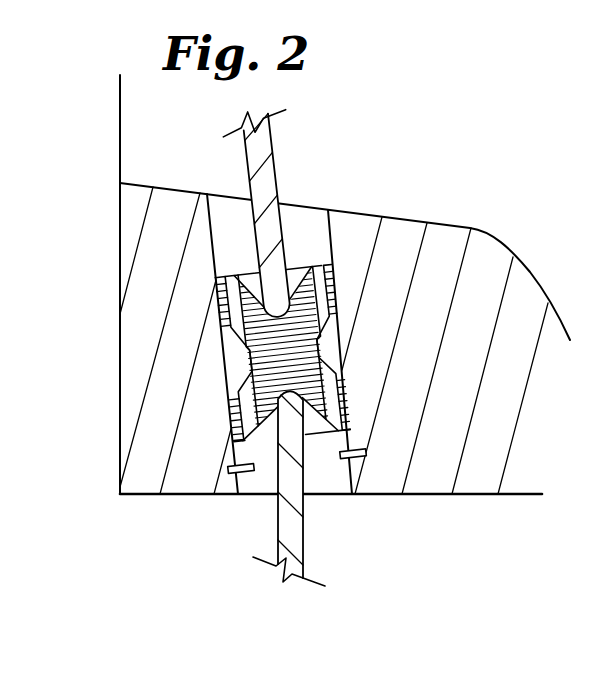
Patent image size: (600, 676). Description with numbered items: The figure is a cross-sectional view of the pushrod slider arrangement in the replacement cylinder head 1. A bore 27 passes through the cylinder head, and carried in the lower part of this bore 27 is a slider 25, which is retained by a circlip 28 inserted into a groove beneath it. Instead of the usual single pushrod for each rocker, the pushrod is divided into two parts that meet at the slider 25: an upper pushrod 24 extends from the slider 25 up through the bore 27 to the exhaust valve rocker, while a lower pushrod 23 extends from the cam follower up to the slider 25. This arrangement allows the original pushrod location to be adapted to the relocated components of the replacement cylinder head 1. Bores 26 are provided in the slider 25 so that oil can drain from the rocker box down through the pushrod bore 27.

The support body 1 is at (140, 363).
The lower pushrod 23 is at (283, 532).
The upper pushrod 24 is at (268, 162).
The slider 25 is at (240, 397).
The bores 26 is at (234, 313).
The bore 27 is at (213, 232).
The circlip 28 is at (343, 468).